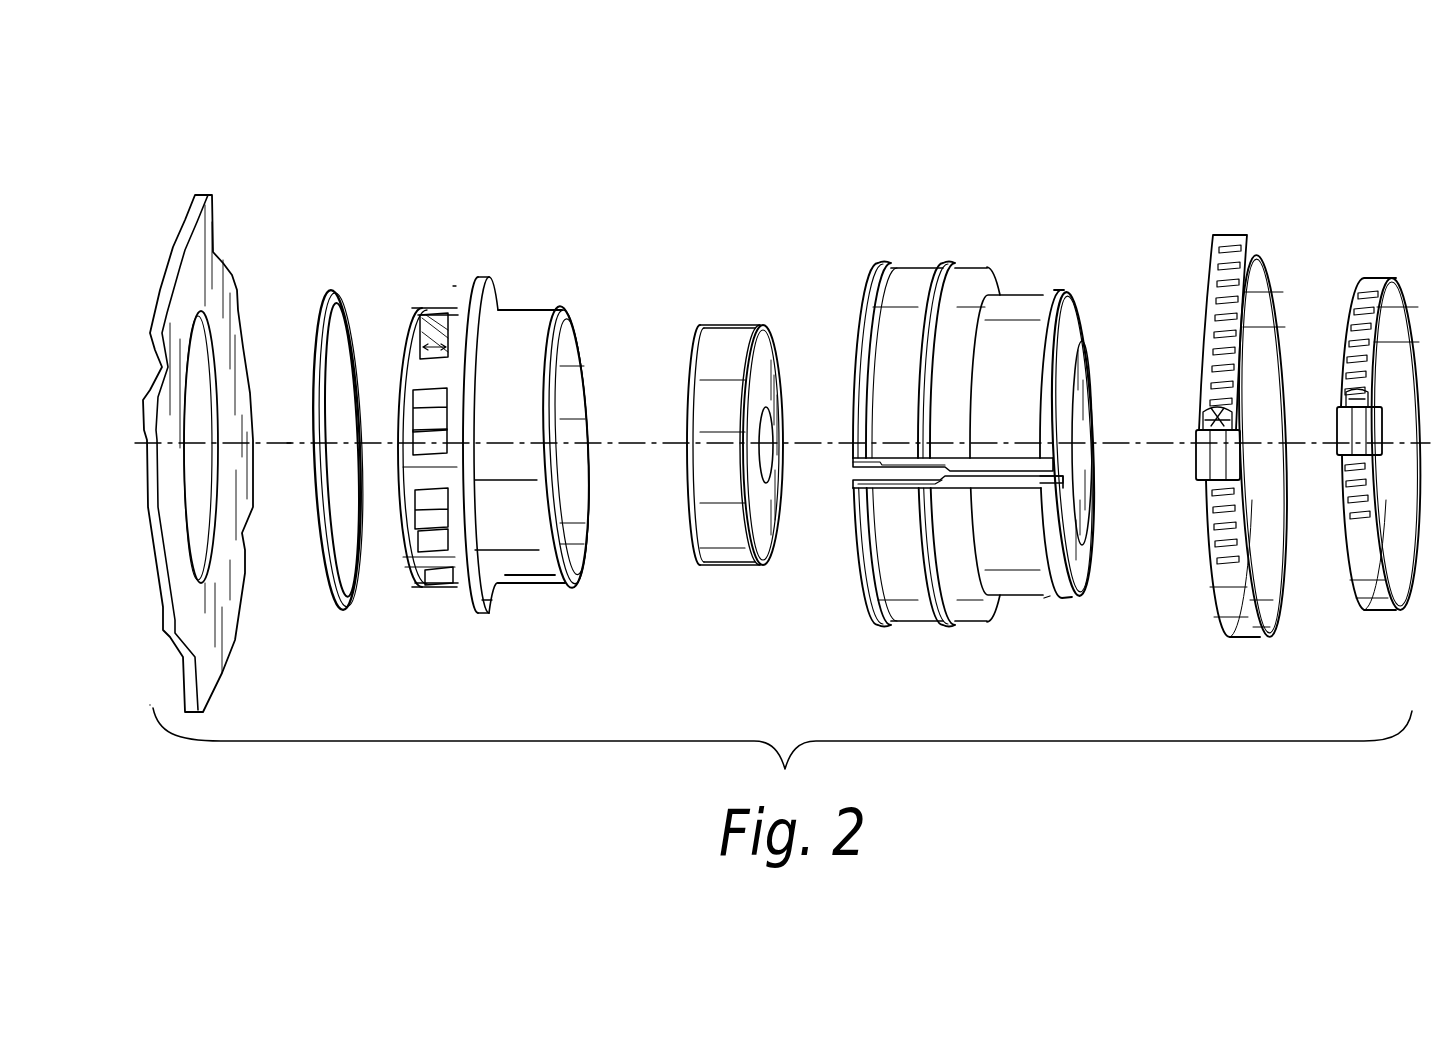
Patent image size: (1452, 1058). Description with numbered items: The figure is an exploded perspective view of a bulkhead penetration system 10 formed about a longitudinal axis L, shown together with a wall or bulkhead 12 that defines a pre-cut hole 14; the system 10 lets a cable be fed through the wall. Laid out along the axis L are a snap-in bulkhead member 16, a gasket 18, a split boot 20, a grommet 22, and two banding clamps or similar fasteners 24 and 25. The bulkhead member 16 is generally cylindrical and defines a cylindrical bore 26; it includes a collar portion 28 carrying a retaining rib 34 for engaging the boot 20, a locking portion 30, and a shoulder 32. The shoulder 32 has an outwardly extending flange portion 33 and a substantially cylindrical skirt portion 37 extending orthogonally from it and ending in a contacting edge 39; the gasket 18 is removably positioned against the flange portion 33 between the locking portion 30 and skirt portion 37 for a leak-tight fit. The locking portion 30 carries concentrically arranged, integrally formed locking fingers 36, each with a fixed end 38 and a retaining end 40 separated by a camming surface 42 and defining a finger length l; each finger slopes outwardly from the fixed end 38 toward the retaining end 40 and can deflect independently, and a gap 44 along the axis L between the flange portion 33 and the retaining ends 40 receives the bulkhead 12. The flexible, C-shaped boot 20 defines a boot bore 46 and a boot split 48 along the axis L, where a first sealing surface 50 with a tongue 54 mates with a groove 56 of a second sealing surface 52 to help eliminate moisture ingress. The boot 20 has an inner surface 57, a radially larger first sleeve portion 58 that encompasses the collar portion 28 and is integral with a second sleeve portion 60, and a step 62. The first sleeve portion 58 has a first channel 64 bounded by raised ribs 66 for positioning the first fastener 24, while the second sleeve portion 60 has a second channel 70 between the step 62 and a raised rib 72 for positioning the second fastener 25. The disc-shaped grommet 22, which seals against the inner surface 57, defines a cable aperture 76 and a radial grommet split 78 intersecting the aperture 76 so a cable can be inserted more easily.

The bulkhead penetration system 10 is at (714, 222).
The bulkhead 12 is at (205, 230).
The pre-cut hole 14 is at (203, 329).
The longitudinal axis L is at (287, 440).
The finger length l is at (445, 345).
The snap-in bulkhead member 16 is at (513, 429).
The gasket 18 is at (340, 612).
The split boot 20 is at (985, 440).
The grommet 22 is at (762, 485).
The first banding clamp 24 is at (1240, 638).
The second banding clamp 25 is at (1380, 612).
The cylindrical bore 26 is at (580, 334).
The collar portion 28 is at (552, 537).
The locking portion 30 is at (405, 545).
The shoulder 32 is at (487, 596).
The flange portion 33 is at (514, 389).
The retaining rib 34 is at (542, 487).
The locking fingers 36 is at (437, 322).
The skirt portion 37 is at (473, 278).
The fixed end 38 is at (412, 441).
The contacting edge 39 is at (453, 285).
The retaining end 40 is at (446, 455).
The camming surface 42 is at (428, 441).
The gap 44 is at (448, 451).
The boot bore 46 is at (1121, 450).
The boot split 48 is at (1070, 462).
The first sealing surface 50 is at (888, 463).
The second sealing surface 52 is at (1073, 470).
The tongue 54 is at (893, 481).
The groove 56 is at (1065, 480).
The inner surface 57 is at (1078, 368).
The first sleeve portion 58 is at (1012, 392).
The second sleeve portion 60 is at (1105, 378).
The step 62 is at (1012, 303).
The first channel 64 is at (903, 287).
The raised rib 66 is at (882, 262).
The second channel 70 is at (1043, 288).
The raised rib 72 is at (1047, 598).
The cable aperture 76 is at (771, 418).
The grommet split 78 is at (759, 400).